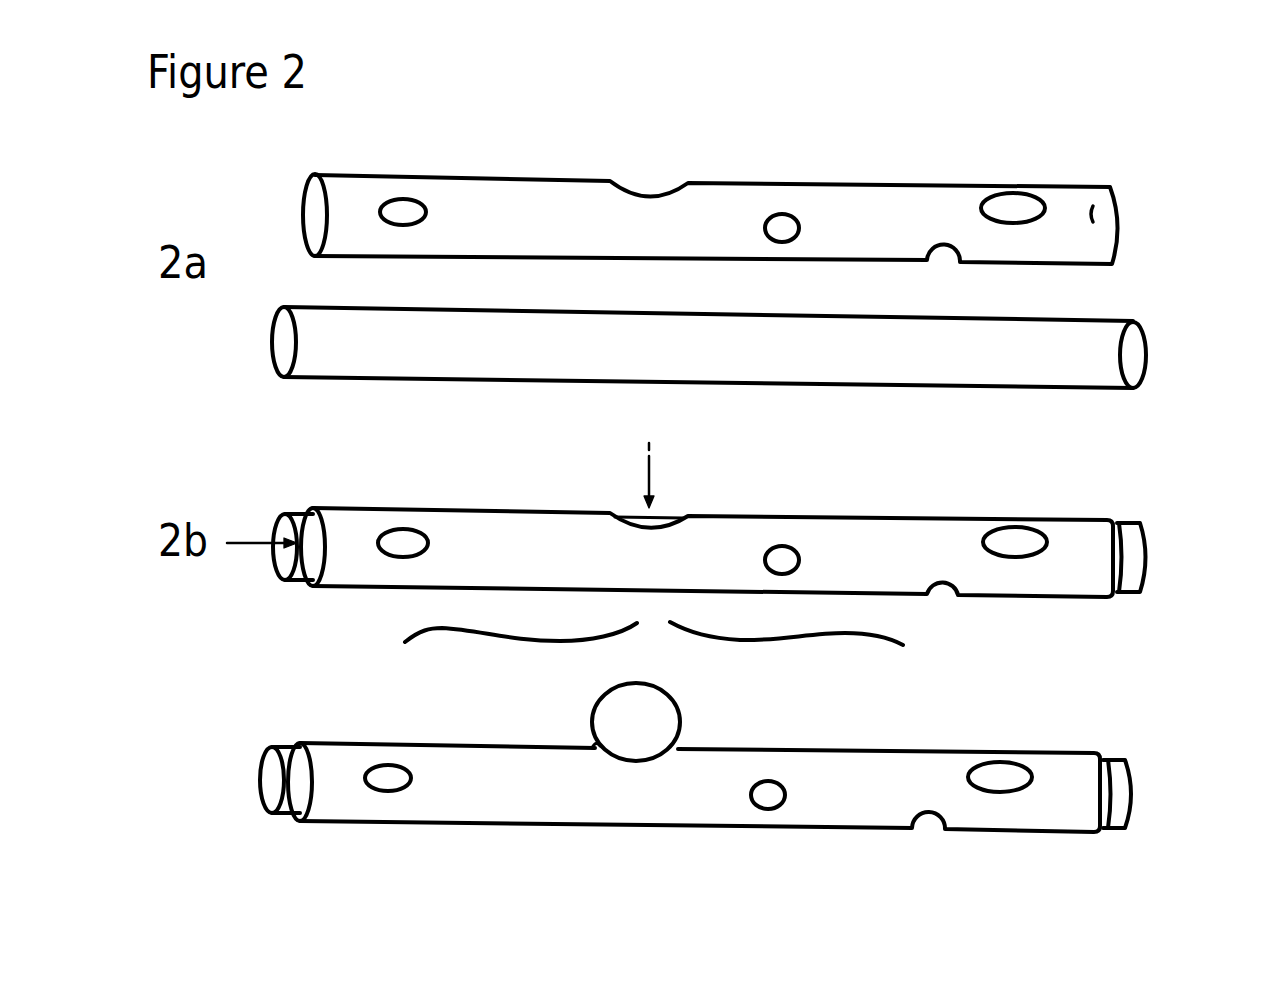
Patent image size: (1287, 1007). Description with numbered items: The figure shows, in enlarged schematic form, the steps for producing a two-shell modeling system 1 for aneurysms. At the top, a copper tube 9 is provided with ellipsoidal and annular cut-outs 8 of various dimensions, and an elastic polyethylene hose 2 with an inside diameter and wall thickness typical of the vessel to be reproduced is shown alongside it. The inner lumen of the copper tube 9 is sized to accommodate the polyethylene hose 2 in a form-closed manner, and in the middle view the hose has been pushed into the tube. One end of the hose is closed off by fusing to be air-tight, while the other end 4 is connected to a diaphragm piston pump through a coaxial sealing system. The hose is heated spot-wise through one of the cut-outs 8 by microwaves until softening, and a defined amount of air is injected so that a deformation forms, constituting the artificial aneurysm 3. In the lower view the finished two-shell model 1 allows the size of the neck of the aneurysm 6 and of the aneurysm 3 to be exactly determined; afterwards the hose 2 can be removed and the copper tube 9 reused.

The two-shell modeling system 1 is at (654, 620).
The polyethylene hose 2 is at (1098, 336).
The artificial aneurysm 3 is at (645, 720).
The other end of hose 4 is at (290, 540).
The neck of the aneurysm 6 is at (596, 745).
The cut-outs 8 is at (405, 209).
The copper tube 9 is at (1100, 208).